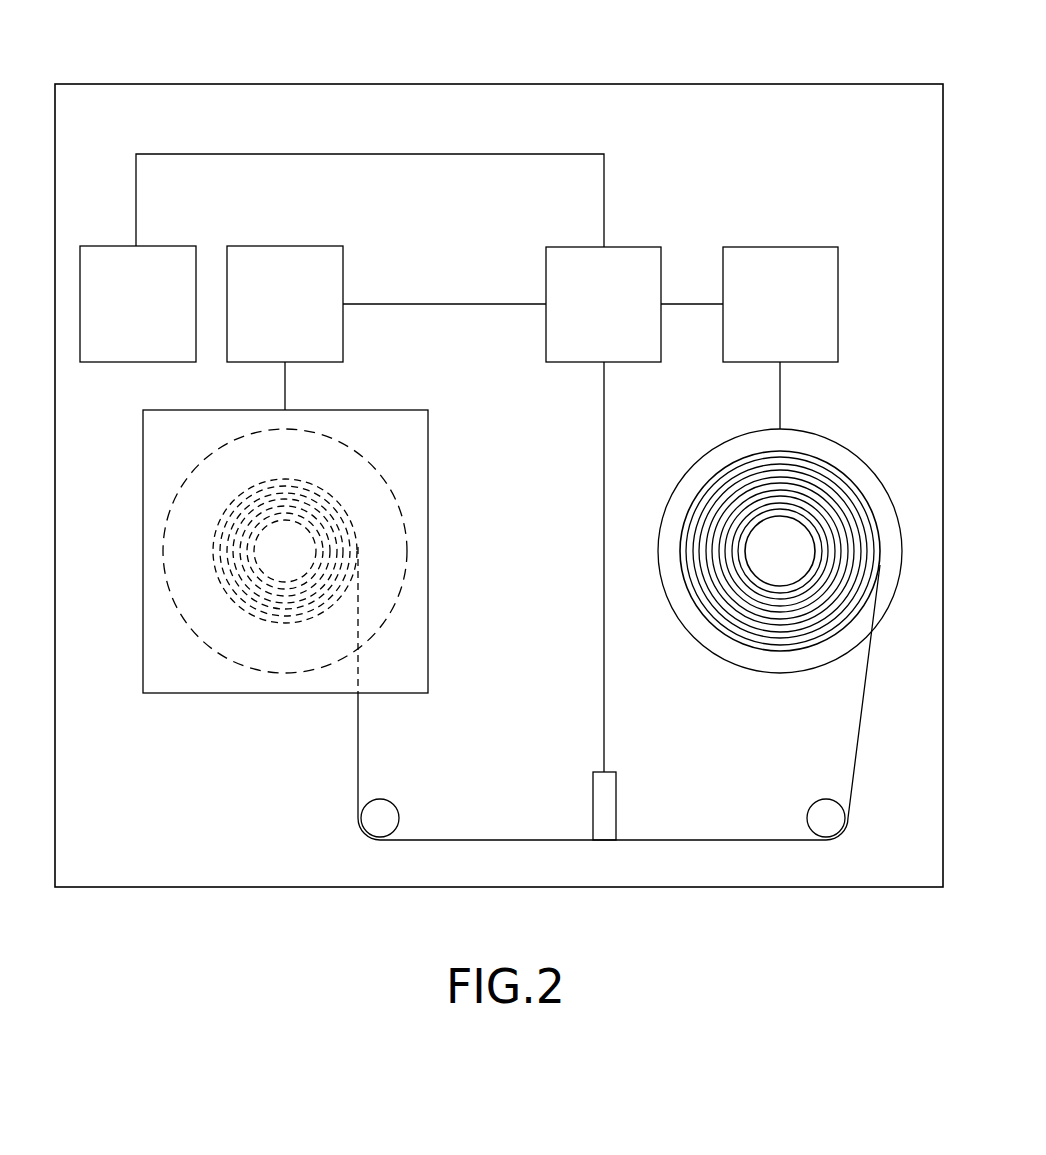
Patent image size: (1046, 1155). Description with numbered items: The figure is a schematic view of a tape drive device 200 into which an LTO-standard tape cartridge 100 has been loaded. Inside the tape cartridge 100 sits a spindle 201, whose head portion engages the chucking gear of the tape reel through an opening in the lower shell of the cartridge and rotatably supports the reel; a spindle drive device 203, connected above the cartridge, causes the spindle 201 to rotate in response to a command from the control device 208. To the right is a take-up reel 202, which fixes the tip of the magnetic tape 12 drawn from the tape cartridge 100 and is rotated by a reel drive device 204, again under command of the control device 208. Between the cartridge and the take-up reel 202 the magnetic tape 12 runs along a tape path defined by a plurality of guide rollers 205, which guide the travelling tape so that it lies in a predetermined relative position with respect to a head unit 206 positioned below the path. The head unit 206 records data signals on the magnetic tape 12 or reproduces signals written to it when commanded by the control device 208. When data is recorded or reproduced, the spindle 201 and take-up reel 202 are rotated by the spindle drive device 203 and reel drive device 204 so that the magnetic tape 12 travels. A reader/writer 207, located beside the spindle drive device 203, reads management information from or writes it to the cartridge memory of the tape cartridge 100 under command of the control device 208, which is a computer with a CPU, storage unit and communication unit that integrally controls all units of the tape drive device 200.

The tape drive device 200 is at (565, 84).
The reader/writer 207 is at (185, 246).
The spindle drive device 203 is at (319, 246).
The control device 208 is at (645, 247).
The reel drive device 204 is at (774, 247).
The tape cartridge 100 is at (398, 410).
The spindle 201 is at (272, 565).
The take-up reel 202 is at (866, 466).
The magnetic tape 12 is at (470, 839).
The guide rollers 205 is at (388, 800).
The head unit 206 is at (616, 800).